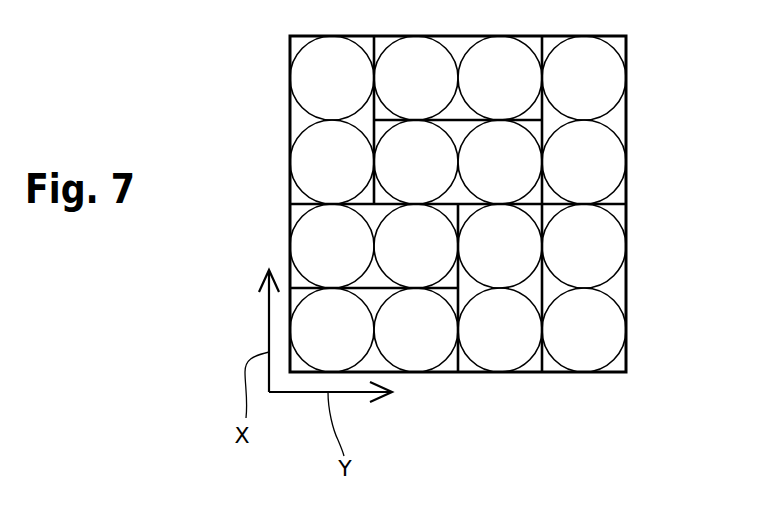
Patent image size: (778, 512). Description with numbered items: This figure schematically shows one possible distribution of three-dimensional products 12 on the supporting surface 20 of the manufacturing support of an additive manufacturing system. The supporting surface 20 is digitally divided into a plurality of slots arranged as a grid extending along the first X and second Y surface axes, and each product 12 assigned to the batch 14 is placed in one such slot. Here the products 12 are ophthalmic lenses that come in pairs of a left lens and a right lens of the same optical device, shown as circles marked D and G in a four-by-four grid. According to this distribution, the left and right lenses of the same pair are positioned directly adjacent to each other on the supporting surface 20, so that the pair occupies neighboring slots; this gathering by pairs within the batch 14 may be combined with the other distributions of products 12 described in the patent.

The product 12 is at (615, 82).
The batch 14 is at (628, 113).
The supporting surface 20 is at (626, 213).